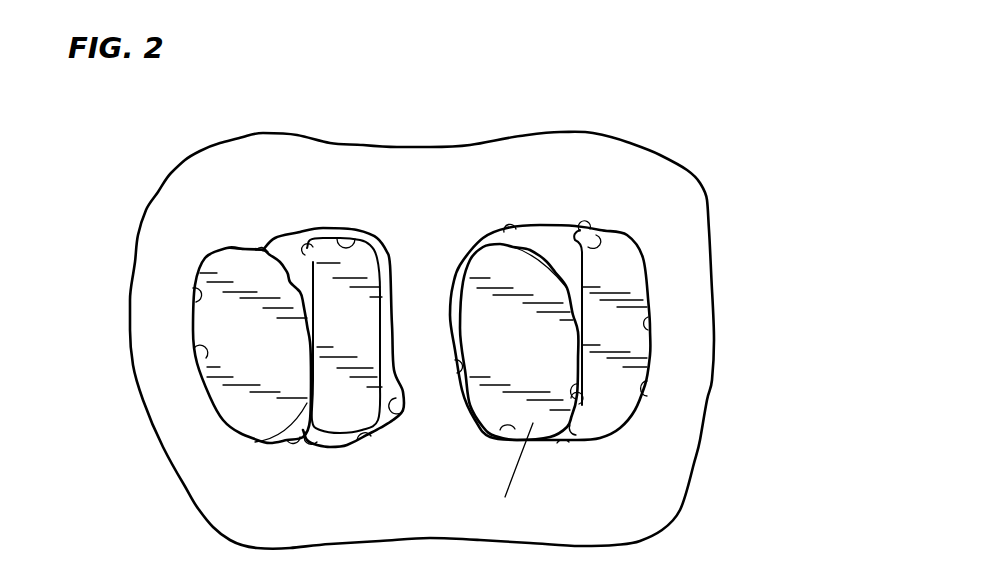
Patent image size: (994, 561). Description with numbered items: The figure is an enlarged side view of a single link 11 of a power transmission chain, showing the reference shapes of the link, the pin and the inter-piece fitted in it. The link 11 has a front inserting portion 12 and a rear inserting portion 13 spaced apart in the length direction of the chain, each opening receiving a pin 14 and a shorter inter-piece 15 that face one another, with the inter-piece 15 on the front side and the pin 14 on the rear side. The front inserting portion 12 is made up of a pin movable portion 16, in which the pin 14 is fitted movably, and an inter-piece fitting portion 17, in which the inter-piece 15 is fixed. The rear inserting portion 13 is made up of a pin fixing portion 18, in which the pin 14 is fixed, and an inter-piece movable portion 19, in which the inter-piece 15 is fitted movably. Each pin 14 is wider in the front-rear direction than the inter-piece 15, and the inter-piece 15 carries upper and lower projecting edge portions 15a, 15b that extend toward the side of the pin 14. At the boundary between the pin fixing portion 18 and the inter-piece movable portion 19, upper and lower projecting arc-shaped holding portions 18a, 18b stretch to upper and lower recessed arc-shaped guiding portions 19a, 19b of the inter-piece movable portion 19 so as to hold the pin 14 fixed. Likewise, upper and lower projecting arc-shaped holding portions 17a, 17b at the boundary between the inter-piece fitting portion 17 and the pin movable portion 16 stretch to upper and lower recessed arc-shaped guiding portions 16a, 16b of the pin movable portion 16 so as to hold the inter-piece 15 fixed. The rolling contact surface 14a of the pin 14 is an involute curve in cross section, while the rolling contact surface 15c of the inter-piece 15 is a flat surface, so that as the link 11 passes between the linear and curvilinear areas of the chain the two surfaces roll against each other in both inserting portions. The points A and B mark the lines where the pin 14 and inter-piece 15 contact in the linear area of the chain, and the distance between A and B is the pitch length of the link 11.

The link 11 is at (708, 204).
The front inserting portion 12 is at (650, 335).
The rear inserting portion 13 is at (200, 363).
The pin 14 is at (223, 407).
The rolling contact surface of the pin 14a is at (300, 292).
The inter-piece 15 is at (357, 318).
The upper projecting edge portion 15a is at (307, 234).
The lower projecting edge portion 15b is at (317, 443).
The rolling contact surface of the inter-piece 15c is at (272, 418).
The pin movable portion 16 is at (457, 367).
The upper recessed arc-shaped guiding portion 16a is at (513, 230).
The lower recessed arc-shaped guiding portion 16b is at (507, 423).
The inter-piece fitting portion 17 is at (650, 377).
The upper projecting arc-shaped holding portion 17a is at (587, 227).
The lower projecting arc-shaped holding portion 17b is at (563, 447).
The pin fixing portion 18 is at (197, 303).
The upper projecting arc-shaped holding portion 18a is at (267, 243).
The lower projecting arc-shaped holding portion 18b is at (293, 445).
The inter-piece movable portion 19 is at (403, 413).
The upper recessed arc-shaped guiding portion 19a is at (358, 247).
The lower recessed arc-shaped guiding portion 19b is at (360, 447).
The contact line A is at (308, 368).
The contact line B is at (578, 370).